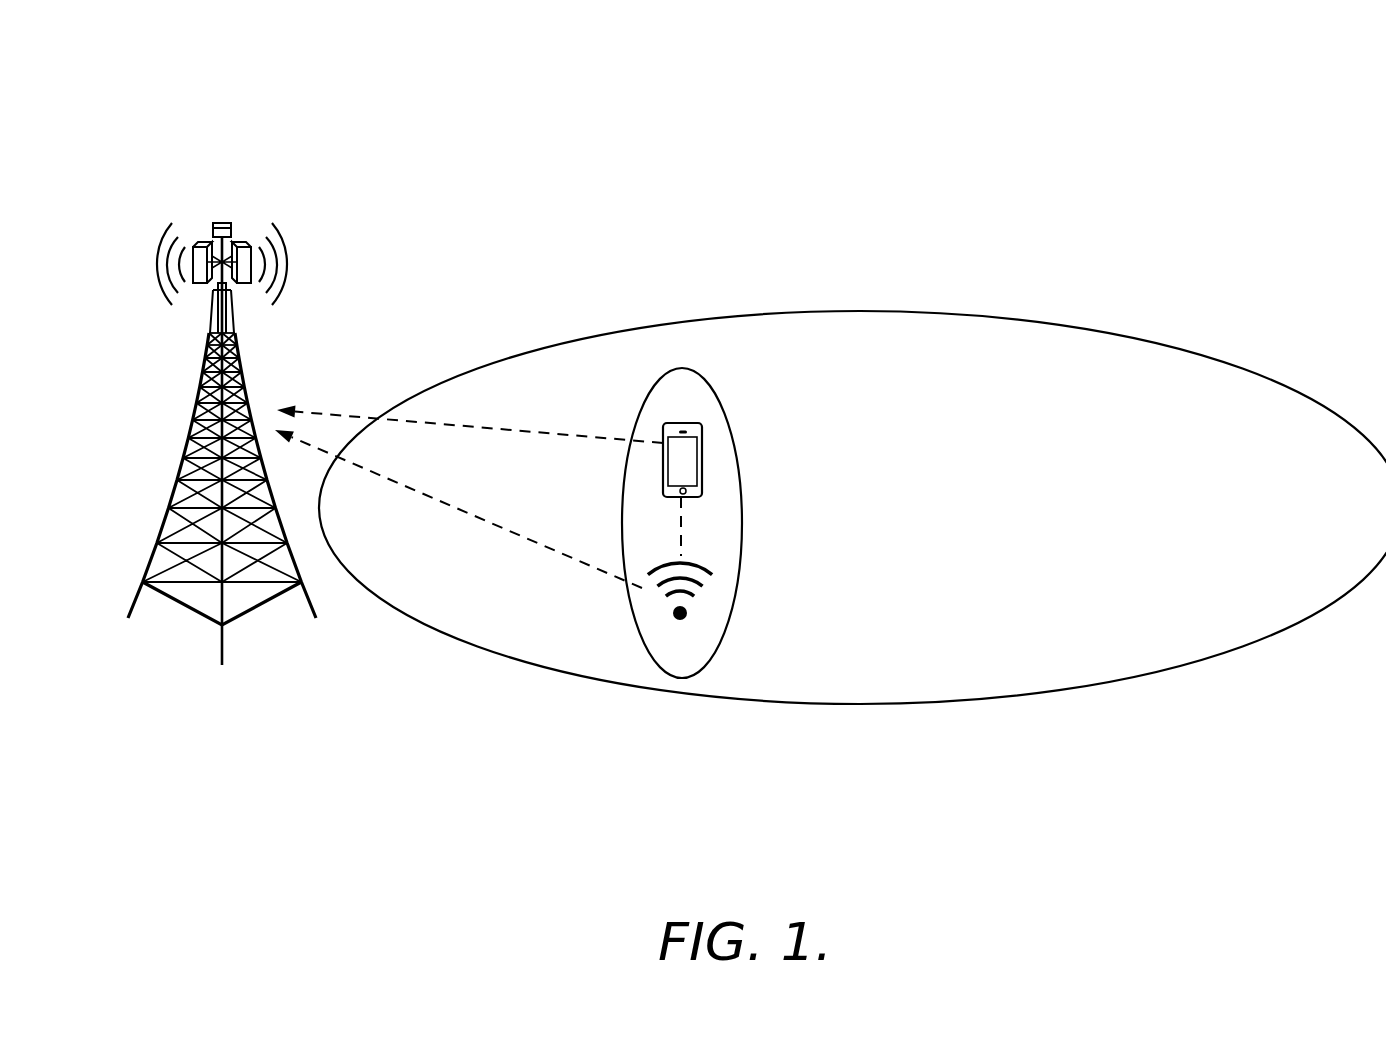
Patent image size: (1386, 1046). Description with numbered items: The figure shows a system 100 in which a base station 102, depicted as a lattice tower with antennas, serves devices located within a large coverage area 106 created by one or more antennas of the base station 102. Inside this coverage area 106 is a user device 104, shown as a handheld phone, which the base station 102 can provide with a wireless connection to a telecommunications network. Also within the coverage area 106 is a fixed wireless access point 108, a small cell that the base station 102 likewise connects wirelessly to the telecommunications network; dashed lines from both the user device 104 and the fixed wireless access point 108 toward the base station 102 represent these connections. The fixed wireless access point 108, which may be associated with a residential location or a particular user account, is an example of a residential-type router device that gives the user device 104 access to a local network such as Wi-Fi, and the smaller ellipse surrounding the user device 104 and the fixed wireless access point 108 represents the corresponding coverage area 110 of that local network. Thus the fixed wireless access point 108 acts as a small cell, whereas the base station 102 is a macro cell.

The system 100 is at (103, 101).
The base station 102 is at (180, 467).
The user device 104 is at (702, 467).
The coverage area 106 is at (895, 311).
The fixed wireless access point 108 is at (687, 613).
The coverage area 110 is at (728, 411).